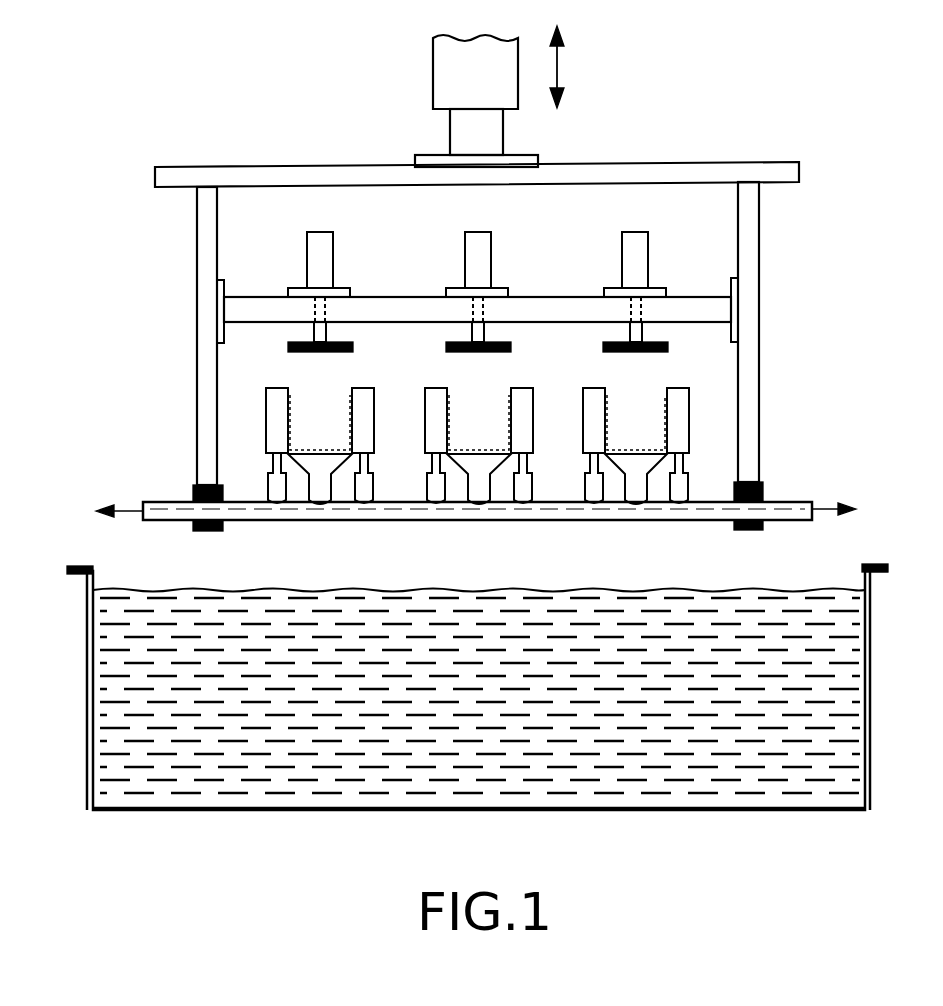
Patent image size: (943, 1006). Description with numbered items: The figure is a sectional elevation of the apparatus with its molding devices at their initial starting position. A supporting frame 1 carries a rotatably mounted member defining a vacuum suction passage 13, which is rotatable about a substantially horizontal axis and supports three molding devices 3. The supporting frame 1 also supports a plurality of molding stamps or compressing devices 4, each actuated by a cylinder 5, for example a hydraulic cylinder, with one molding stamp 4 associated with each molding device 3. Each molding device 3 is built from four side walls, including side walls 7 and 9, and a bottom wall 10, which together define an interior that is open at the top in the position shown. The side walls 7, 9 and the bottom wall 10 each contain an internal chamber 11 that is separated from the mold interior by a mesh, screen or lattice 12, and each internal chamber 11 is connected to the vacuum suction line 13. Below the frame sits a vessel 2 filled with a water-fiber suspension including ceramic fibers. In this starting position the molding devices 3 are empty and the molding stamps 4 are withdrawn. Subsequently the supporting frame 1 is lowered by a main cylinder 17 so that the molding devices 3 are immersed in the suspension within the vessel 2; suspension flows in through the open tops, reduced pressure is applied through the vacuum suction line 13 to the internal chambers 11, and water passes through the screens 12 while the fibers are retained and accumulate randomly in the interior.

The supporting frame 1 is at (172, 344).
The vessel 2 is at (88, 694).
The molding device 3 is at (480, 423).
The molding stamp 4 is at (292, 353).
The cylinder 5 is at (333, 246).
The side wall 7 is at (374, 398).
The side wall 9 is at (272, 413).
The bottom wall 10 is at (313, 473).
The internal chamber 11 is at (352, 395).
The screen 12 is at (292, 440).
The vacuum suction passage 13 is at (684, 515).
The main cylinder 17 is at (439, 83).